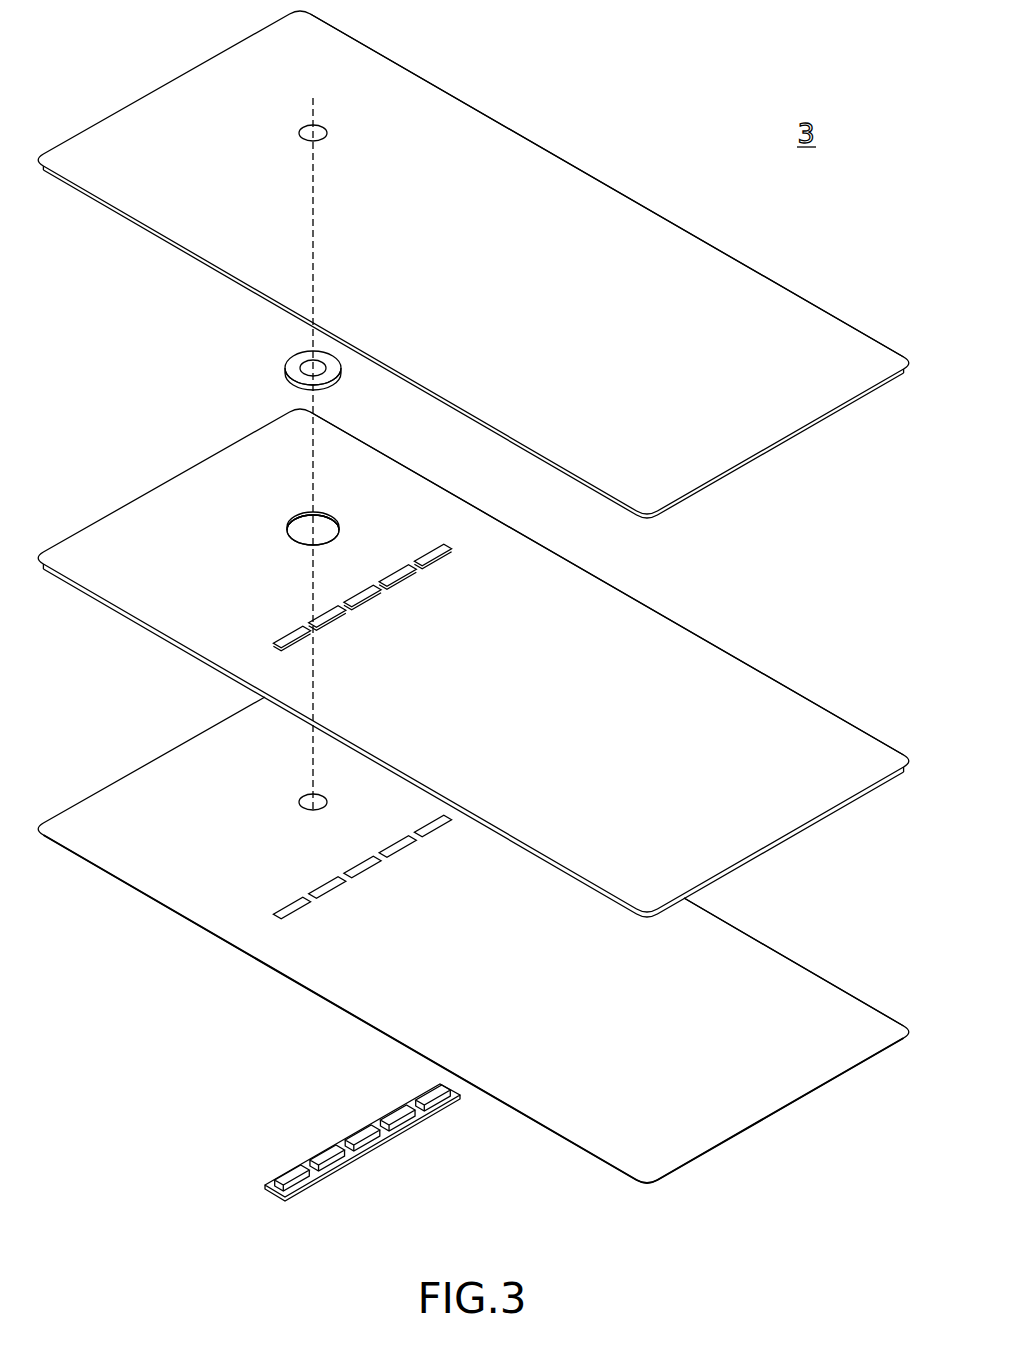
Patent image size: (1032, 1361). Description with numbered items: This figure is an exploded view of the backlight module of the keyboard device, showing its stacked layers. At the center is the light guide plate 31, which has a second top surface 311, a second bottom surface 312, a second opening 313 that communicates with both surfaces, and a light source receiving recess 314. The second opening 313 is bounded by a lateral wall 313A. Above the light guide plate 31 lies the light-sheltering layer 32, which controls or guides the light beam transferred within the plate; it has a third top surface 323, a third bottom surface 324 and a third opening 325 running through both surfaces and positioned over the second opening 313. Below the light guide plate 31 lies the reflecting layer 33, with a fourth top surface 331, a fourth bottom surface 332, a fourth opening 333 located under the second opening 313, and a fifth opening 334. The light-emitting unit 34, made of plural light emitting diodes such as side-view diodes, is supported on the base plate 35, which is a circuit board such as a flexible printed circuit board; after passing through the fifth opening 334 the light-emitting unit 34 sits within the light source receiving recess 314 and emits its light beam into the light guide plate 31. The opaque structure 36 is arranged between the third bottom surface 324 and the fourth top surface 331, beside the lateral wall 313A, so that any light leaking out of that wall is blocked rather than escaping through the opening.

The light guide plate 31 is at (145, 515).
The second top surface 311 is at (775, 706).
The second bottom surface 312 is at (803, 828).
The second opening 313 is at (297, 543).
The lateral wall 313A is at (327, 517).
The light source receiving recess 314 is at (407, 580).
The light-sheltering layer 32 is at (145, 117).
The third top surface 323 is at (775, 308).
The third bottom surface 324 is at (803, 433).
The third opening 325 is at (318, 126).
The reflecting layer 33 is at (145, 787).
The fourth top surface 331 is at (775, 978).
The fourth bottom surface 332 is at (803, 1103).
The fourth opening 333 is at (306, 808).
The fifth opening 334 is at (407, 851).
The light-emitting unit 34 is at (400, 1108).
The base plate 35 is at (397, 1135).
The opaque structure 36 is at (298, 353).